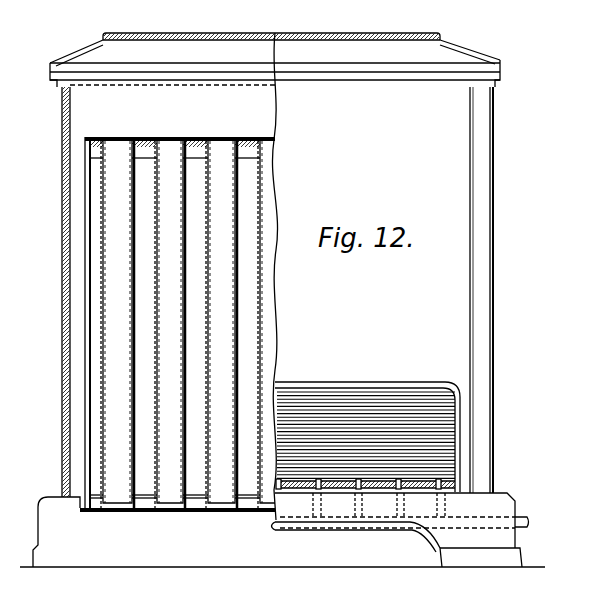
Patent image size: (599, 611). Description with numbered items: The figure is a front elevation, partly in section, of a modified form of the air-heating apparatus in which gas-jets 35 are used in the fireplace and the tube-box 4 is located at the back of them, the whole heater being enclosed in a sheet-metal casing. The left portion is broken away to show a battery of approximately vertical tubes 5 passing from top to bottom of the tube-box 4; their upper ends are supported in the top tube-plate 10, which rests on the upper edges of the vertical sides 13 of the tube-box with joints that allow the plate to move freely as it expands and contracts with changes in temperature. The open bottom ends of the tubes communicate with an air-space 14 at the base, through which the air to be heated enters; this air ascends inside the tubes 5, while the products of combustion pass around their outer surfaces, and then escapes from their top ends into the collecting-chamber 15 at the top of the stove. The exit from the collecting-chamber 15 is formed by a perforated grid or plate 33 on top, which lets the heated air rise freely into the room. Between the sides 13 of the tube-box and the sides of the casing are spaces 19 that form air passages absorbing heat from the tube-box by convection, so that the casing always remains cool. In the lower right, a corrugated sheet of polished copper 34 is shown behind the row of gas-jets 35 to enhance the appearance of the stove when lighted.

The tube-box 4 is at (156, 376).
The vertical tubes 5 is at (186, 362).
The top tube-plate 10 is at (143, 146).
The vertical sides of the tube-box 13 is at (85, 370).
The air-space 14 is at (282, 530).
The collecting-chamber 15 is at (275, 80).
The spaces 19 is at (73, 323).
The perforated grid or plate 33 is at (232, 38).
The corrugated sheet of polished copper 34 is at (367, 437).
The gas-jets 35 is at (371, 480).